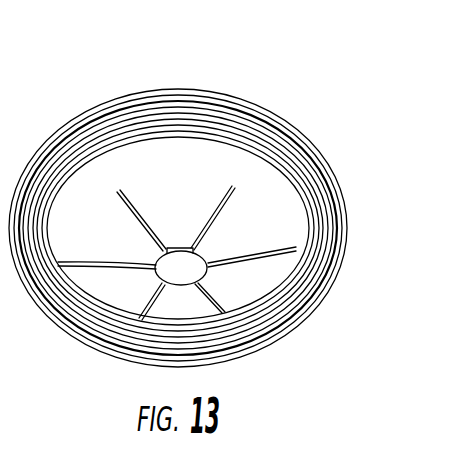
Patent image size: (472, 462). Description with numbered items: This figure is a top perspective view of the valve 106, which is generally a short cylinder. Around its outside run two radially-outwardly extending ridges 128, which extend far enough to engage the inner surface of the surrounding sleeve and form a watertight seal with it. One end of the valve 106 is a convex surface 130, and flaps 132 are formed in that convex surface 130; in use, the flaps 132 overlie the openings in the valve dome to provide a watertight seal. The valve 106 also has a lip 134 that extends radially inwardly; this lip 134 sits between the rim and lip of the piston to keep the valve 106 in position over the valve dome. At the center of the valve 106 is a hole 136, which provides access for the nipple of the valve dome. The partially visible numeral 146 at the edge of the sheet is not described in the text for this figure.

The rim 106 is at (299, 128).
The rim grooves 128 is at (313, 284).
The inner panel 130 is at (195, 183).
The spokes 132 is at (130, 235).
The rim top surface 134 is at (155, 90).
The hub 136 is at (178, 258).
The partial numeral 146 is at (279, 457).